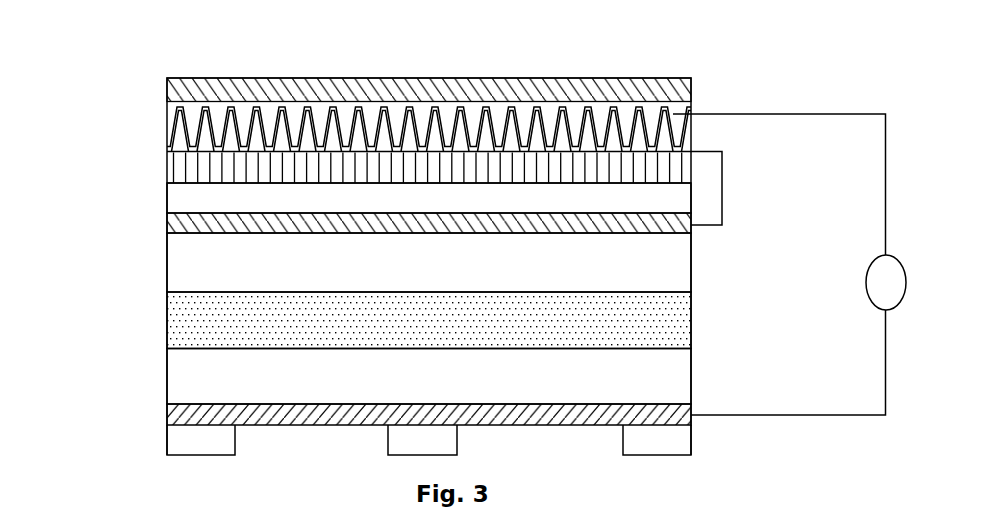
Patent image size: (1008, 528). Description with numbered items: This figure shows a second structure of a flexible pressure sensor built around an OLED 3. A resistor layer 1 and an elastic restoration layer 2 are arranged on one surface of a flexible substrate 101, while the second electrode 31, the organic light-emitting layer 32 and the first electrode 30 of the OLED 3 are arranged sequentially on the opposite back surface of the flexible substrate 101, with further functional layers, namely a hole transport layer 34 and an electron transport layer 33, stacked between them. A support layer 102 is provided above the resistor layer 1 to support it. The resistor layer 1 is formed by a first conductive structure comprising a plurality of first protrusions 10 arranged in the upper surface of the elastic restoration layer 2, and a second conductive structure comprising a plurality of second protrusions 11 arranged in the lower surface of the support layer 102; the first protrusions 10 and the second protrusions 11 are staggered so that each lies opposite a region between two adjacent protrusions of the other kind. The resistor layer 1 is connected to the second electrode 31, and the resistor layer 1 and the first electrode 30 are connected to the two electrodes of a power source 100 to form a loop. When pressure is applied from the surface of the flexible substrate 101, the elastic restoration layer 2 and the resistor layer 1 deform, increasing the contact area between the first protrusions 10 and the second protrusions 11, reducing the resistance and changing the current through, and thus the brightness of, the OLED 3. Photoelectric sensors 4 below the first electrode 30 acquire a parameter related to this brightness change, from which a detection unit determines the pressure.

The resistor layer 1 is at (156, 128).
The support layer 102 is at (205, 88).
The second protrusions 11 is at (673, 108).
The first protrusions 10 is at (660, 133).
The elastic restoration layer 2 is at (205, 168).
The flexible substrate 101 is at (205, 198).
The OLED 3 is at (353, 318).
The second electrode 31 is at (205, 222).
The hole transport layer 34 is at (205, 263).
The organic light-emitting layer 32 is at (205, 320).
The electron transport layer 33 is at (205, 373).
The first electrode 30 is at (387, 413).
The photoelectric sensor 4 is at (205, 438).
The power source 100 is at (887, 285).